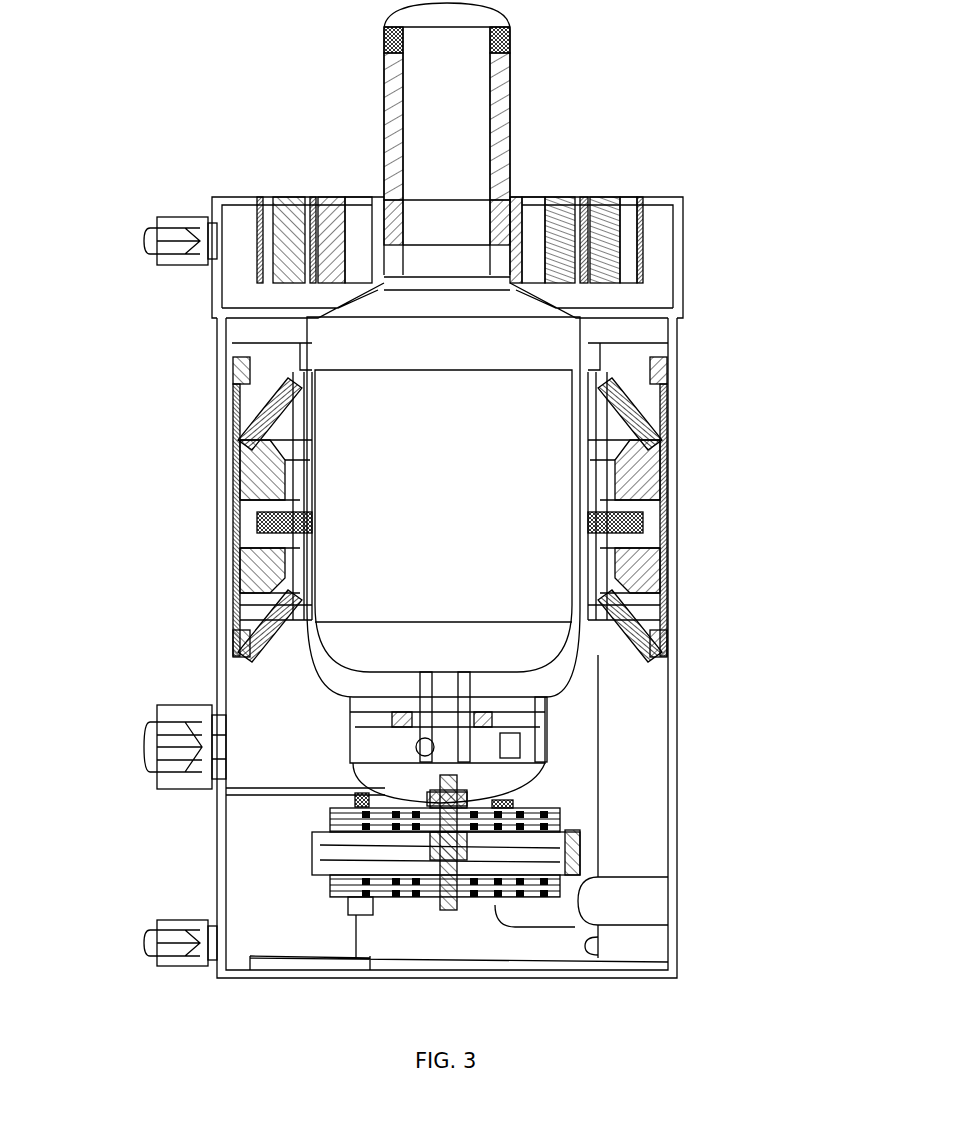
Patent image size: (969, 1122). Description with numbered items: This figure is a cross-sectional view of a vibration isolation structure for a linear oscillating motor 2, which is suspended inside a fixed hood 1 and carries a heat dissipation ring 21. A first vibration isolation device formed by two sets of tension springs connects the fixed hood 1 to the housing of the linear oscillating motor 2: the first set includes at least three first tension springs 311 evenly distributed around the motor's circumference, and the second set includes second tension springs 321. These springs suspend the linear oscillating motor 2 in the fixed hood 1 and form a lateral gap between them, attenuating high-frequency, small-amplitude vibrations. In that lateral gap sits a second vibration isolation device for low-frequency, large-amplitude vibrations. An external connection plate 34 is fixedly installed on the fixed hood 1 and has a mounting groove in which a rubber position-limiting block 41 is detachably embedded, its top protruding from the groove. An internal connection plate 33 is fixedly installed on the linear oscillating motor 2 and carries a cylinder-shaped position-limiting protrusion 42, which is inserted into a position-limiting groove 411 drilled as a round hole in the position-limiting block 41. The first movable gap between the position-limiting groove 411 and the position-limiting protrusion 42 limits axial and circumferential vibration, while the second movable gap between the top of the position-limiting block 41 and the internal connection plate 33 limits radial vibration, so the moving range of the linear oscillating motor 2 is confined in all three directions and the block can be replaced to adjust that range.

The fixed hood 1 is at (222, 511).
The linear oscillating motor 2 is at (577, 710).
The heat dissipation ring 21 is at (572, 200).
The internal connection plate 33 is at (583, 492).
The external connection plate 34 is at (677, 340).
The first tension spring 311 is at (677, 387).
The position-limiting block 41 is at (677, 460).
The position-limiting protrusion 42 is at (643, 518).
The position-limiting groove 411 is at (678, 534).
The second tension spring 321 is at (680, 636).